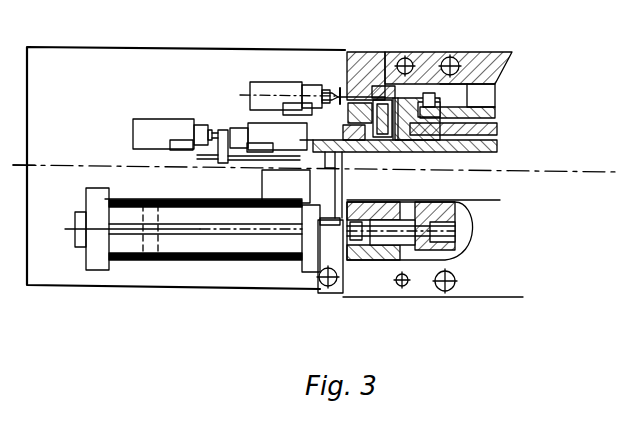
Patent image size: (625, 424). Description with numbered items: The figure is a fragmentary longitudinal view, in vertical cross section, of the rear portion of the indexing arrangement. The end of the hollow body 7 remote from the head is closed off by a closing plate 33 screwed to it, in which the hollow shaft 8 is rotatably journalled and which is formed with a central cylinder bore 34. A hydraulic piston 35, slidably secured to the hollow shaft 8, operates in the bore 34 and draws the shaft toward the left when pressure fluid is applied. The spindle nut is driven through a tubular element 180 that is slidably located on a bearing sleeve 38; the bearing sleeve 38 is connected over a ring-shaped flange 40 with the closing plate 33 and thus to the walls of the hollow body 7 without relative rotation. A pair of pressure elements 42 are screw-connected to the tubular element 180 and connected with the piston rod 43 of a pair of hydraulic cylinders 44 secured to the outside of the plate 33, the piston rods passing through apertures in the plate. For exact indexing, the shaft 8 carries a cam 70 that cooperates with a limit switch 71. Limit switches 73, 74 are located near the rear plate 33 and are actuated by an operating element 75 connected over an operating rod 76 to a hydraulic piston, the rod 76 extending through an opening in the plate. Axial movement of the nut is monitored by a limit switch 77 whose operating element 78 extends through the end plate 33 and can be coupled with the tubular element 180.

The limit switch 73 is at (166, 128).
The operating element 75 is at (224, 140).
The limit switch 74 is at (270, 135).
The limit switch 77 is at (272, 88).
The cam 70 is at (333, 95).
The closing plate 33 is at (360, 100).
The operating element 78 is at (390, 95).
The cylinder bore 34 is at (420, 62).
The ring-shaped flange 40 is at (452, 55).
The hollow body 7 is at (492, 60).
The tubular element 180 is at (495, 108).
The bearing sleeve 38 is at (497, 130).
The hollow shaft 8 is at (497, 148).
The hydraulic piston 35 is at (385, 147).
The operating rod 76 is at (295, 160).
The hydraulic cylinders 44 is at (148, 258).
The piston rod 43 is at (247, 235).
The limit switch 71 is at (323, 292).
The pressure element 42 is at (448, 255).